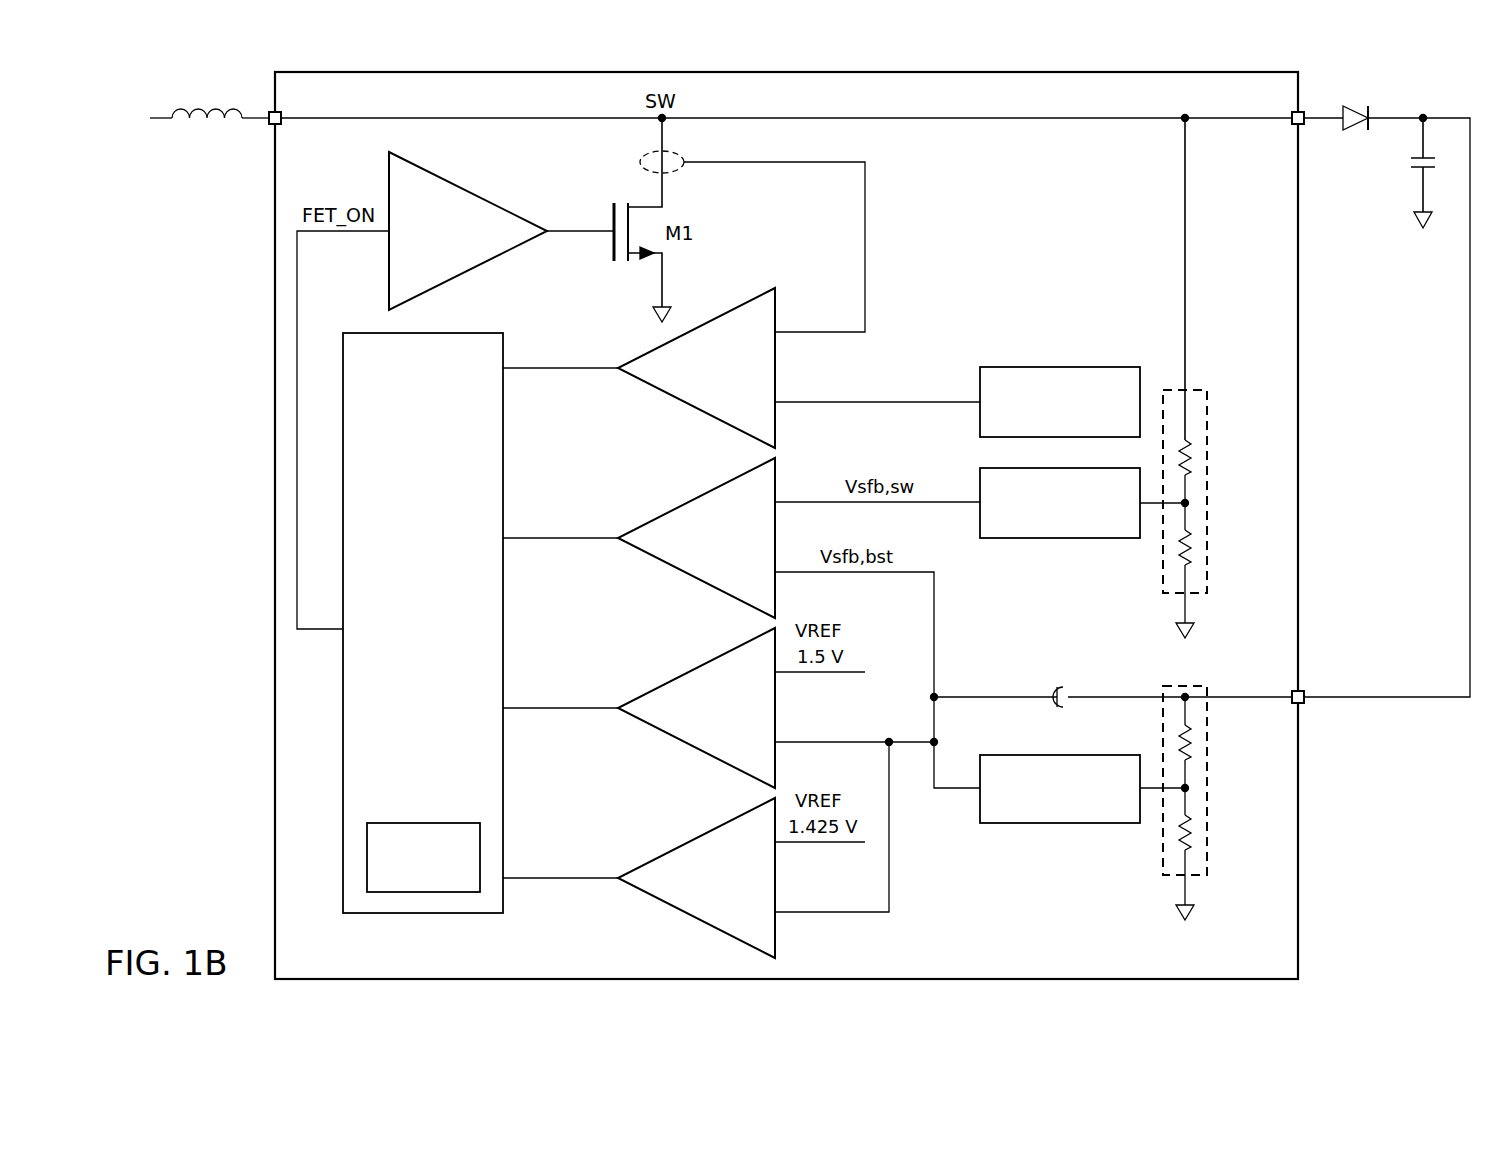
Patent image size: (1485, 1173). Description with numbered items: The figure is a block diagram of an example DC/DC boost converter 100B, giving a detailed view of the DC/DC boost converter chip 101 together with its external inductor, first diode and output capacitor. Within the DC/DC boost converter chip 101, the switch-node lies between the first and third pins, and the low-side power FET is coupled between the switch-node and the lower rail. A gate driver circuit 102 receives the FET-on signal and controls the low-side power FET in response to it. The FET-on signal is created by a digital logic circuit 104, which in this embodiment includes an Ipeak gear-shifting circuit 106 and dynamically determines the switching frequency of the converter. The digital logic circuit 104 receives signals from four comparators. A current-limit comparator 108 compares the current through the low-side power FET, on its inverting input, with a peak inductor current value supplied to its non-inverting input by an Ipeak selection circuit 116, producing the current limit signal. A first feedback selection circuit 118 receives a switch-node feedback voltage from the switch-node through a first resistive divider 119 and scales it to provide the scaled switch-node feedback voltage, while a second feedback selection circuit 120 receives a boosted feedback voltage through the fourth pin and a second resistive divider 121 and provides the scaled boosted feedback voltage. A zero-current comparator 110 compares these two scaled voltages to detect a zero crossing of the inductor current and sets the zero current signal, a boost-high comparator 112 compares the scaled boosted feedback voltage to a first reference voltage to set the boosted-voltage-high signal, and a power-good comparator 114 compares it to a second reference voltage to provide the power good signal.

The DC/DC boost converter 100B is at (1392, 926).
The DC/DC boost converter chip 101 is at (1304, 404).
The gate driver circuit 102 is at (470, 189).
The digital logic circuit 104 is at (403, 627).
The Ipeak gear-shifting circuit 106 is at (403, 868).
The current-limit comparator 108 is at (697, 407).
The zero-current comparator 110 is at (697, 577).
The boost-high comparator 112 is at (697, 747).
The power-good comparator 114 is at (697, 917).
The Ipeak selection circuit 116 is at (1060, 366).
The first feedback selection circuit 118 is at (1060, 539).
The first resistive divider 119 is at (1212, 477).
The second feedback selection circuit 120 is at (1060, 824).
The second resistive divider 121 is at (1212, 794).